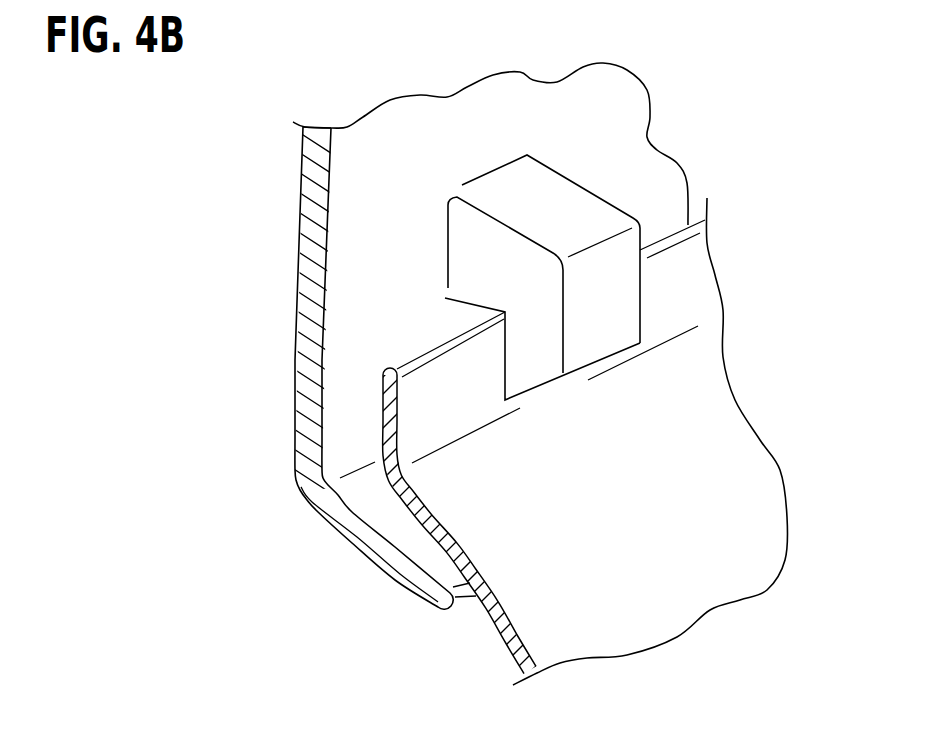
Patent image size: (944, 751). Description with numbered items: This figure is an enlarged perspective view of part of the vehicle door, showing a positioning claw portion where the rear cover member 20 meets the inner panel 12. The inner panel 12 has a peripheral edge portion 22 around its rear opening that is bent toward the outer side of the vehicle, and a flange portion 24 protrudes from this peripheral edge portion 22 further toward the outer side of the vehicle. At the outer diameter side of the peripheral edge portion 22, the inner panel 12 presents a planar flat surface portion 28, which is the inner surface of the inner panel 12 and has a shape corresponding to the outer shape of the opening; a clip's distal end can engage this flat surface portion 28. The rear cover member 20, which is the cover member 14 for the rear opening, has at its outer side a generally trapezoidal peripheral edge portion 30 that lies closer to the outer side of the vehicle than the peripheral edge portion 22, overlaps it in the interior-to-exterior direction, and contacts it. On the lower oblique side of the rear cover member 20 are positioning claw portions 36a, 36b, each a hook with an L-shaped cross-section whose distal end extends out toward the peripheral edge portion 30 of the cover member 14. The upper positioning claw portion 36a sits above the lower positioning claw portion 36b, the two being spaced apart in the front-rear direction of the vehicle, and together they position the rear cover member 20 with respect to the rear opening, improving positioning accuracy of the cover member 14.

The inner panel 12 is at (732, 482).
The cover member 14 is at (283, 291).
The rear cover member 20 is at (300, 364).
The peripheral edge portion 22 is at (427, 357).
The flange portion 24 is at (430, 400).
The flat surface portion 28 is at (462, 393).
The peripheral edge portion 30 is at (462, 596).
The positioning claw portion 36a is at (651, 277).
The positioning claw portion 36b is at (615, 307).